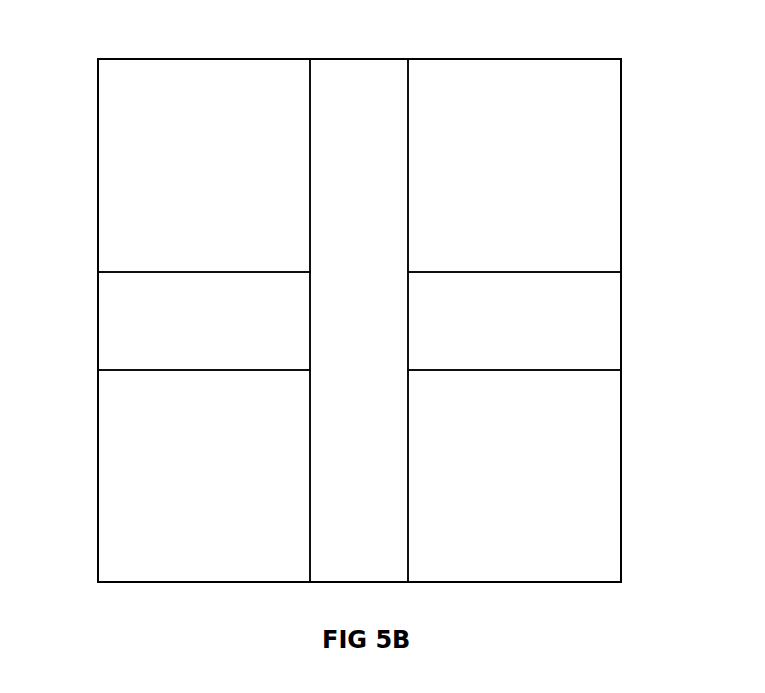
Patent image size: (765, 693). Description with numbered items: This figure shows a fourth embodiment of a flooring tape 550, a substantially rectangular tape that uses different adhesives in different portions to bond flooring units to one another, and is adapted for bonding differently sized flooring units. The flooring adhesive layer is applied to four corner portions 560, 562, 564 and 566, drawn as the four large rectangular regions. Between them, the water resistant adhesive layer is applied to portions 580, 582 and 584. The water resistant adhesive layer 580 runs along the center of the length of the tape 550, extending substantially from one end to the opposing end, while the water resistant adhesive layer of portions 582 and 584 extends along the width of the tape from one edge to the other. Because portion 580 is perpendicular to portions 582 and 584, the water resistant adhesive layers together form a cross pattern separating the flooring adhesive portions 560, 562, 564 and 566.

The flooring tape 550 is at (112, 37).
The water resistant adhesive layer portion 580 is at (372, 77).
The flooring adhesive layer portion 560 is at (605, 158).
The flooring adhesive layer portion 562 is at (597, 500).
The flooring adhesive layer portion 564 is at (130, 520).
The flooring adhesive layer portion 566 is at (123, 192).
The water resistant adhesive layer portion 582 is at (605, 338).
The water resistant adhesive layer portion 584 is at (115, 330).